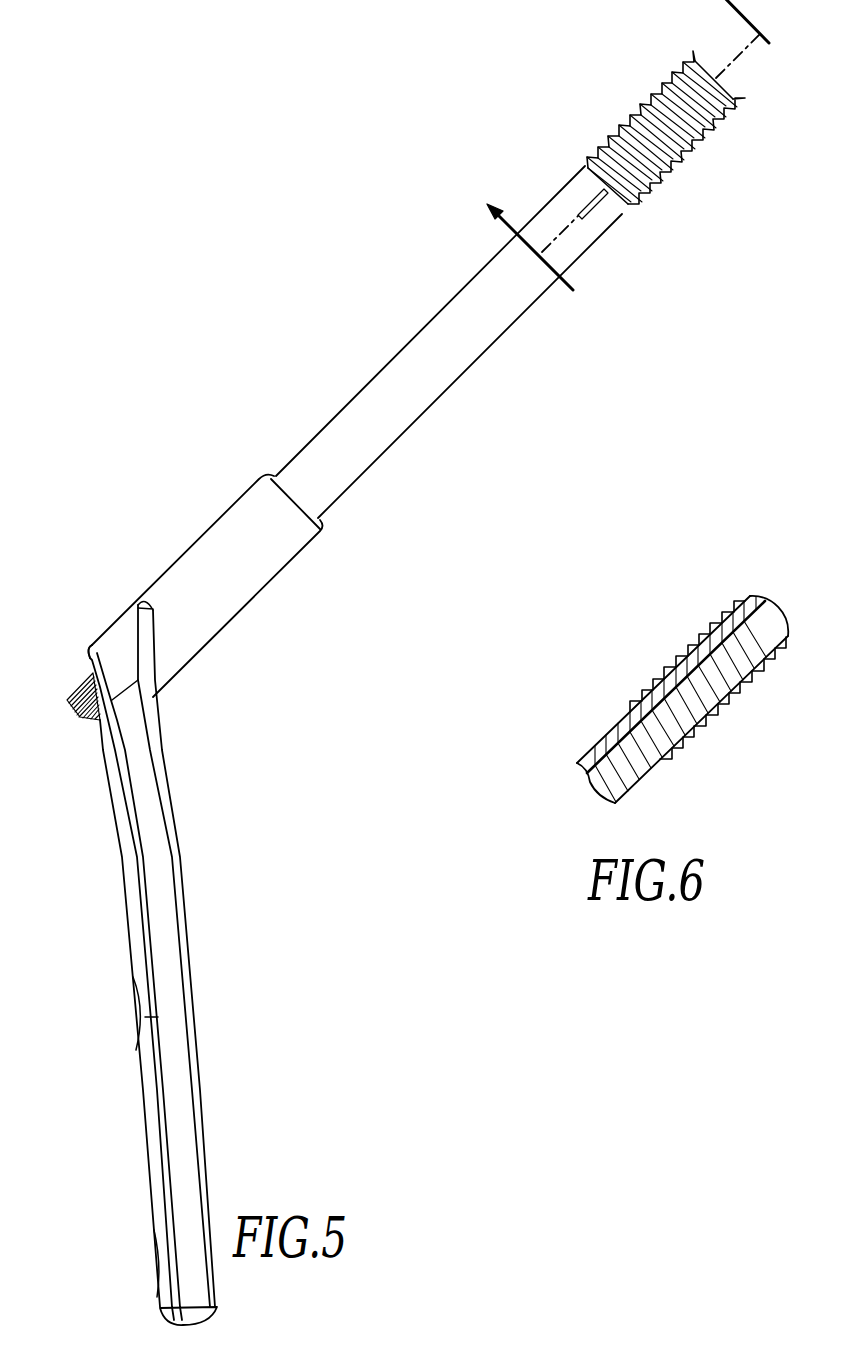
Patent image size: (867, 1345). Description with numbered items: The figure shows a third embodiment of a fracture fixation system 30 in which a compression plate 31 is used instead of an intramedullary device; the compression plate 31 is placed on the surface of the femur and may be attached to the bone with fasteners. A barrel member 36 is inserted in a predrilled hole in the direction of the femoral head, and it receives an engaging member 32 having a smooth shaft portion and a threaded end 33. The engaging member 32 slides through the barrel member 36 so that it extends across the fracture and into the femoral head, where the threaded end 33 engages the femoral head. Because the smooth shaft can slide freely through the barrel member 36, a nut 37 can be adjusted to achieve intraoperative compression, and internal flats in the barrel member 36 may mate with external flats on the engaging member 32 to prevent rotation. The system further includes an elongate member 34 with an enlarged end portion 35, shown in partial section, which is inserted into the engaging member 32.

In FIG. 5, the fracture fixation system 30 is at (212, 462).
In FIG. 5, the compression plate 31 is at (198, 1060).
In FIG. 5, the engaging member 32 is at (421, 417).
In FIG. 5, the threaded end 33 is at (688, 162).
In FIG. 5, the elongate member 34 is at (68, 712).
In FIG. 6, the elongate member 34 is at (653, 757).
In FIG. 6, the enlarged end portion 35 is at (770, 607).
In FIG. 5, the barrel member 36 is at (241, 612).
In FIG. 5, the nut 37 is at (87, 653).